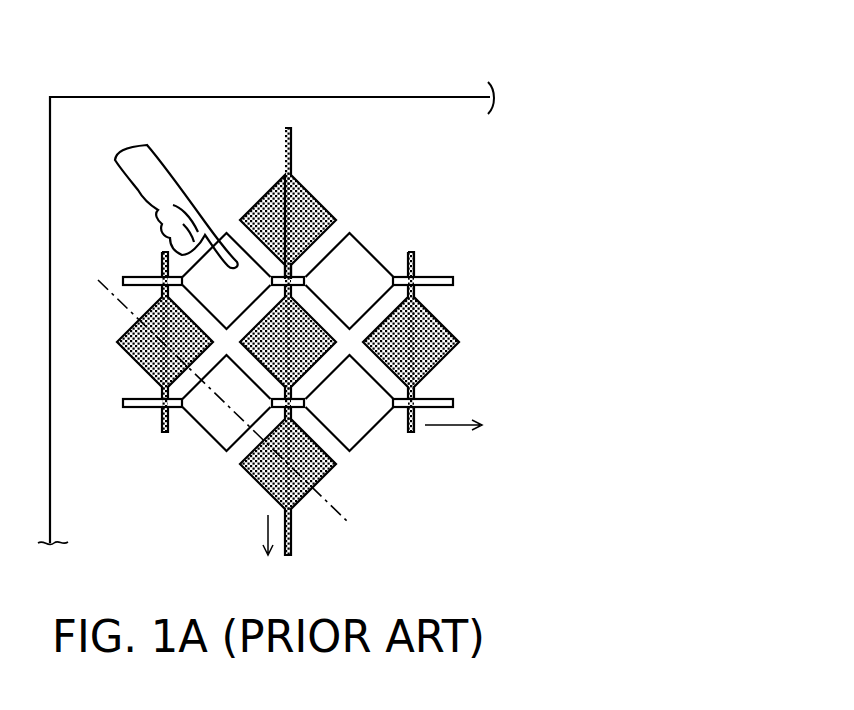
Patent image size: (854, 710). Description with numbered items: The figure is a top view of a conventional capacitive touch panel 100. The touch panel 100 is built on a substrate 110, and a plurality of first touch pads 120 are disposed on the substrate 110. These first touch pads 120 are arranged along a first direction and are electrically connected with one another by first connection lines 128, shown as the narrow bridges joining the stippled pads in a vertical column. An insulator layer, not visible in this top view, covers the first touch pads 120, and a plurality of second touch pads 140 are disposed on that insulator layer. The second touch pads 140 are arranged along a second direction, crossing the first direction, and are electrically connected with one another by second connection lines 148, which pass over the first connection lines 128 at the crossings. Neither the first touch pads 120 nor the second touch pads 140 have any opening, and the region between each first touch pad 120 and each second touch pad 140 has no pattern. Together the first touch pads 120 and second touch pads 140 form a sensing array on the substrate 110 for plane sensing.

The capacitive touch panel 100 is at (500, 566).
The substrate 110 is at (373, 123).
The first touch pads 120 is at (278, 207).
The first connection lines 128 is at (282, 268).
The second touch pads 140 is at (357, 262).
The second connection lines 148 is at (300, 278).